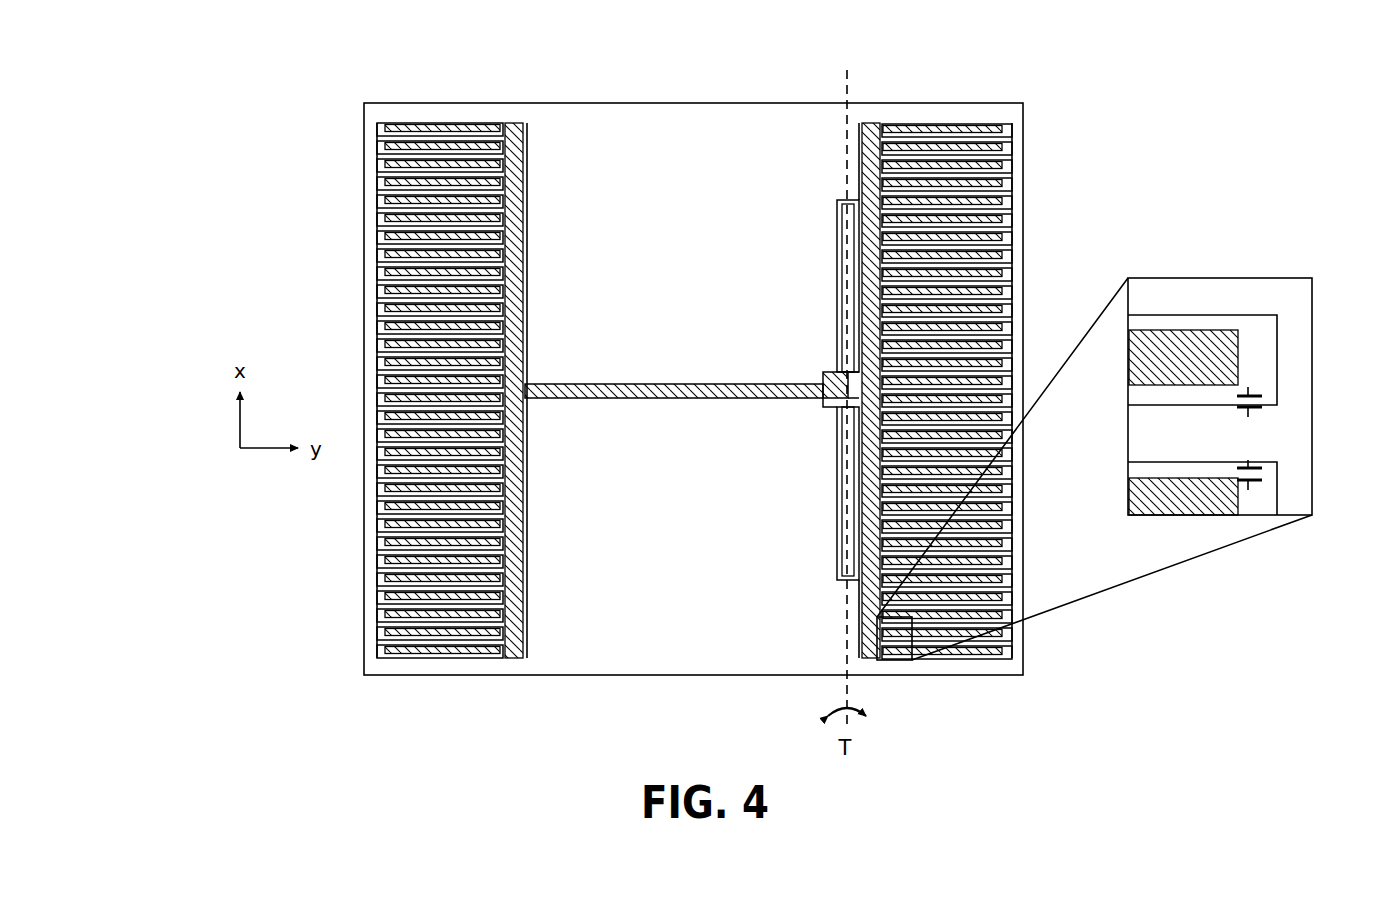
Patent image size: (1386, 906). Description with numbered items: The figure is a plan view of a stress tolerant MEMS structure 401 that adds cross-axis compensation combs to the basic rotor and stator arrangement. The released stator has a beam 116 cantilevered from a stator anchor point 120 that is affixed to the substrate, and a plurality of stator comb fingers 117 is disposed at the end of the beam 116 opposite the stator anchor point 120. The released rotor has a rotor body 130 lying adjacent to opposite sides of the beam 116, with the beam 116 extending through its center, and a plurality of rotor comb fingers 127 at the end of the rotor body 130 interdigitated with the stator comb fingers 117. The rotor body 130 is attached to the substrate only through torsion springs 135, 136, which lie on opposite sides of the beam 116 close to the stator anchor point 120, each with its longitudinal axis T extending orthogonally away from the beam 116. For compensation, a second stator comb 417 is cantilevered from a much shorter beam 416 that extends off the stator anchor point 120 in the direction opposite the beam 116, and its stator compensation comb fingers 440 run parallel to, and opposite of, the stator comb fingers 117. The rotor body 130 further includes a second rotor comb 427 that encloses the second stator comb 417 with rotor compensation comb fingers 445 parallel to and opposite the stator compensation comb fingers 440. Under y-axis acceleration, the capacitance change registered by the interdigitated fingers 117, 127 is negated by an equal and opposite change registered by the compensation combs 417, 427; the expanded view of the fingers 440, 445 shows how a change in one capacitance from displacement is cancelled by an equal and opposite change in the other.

The MEMS structure 401 is at (247, 152).
The stator comb fingers 117 is at (372, 102).
The rotor comb fingers 127 is at (500, 675).
The second stator comb 417 is at (1013, 102).
The second rotor comb 427 is at (1035, 675).
The rotor body 130 is at (649, 257).
The beam 116 is at (608, 398).
The stator anchor point 120 is at (822, 374).
The beam 416 is at (853, 382).
The torsion spring 135 is at (860, 126).
The torsion spring 136 is at (842, 500).
The rotor compensation comb fingers 445 is at (1160, 447).
The stator compensation comb fingers 440 is at (1186, 497).